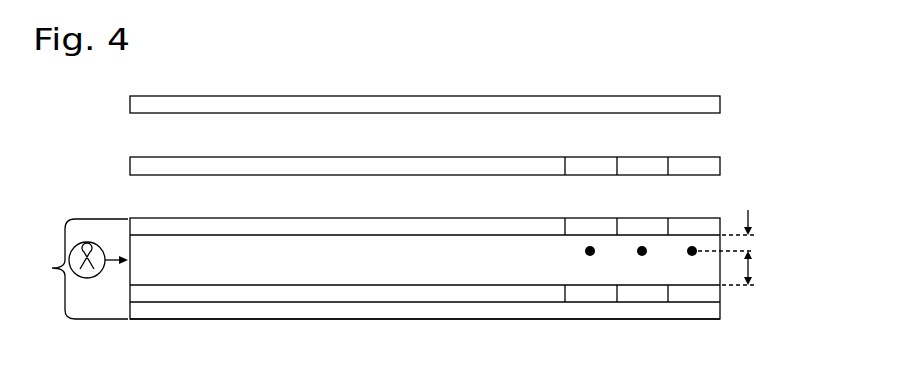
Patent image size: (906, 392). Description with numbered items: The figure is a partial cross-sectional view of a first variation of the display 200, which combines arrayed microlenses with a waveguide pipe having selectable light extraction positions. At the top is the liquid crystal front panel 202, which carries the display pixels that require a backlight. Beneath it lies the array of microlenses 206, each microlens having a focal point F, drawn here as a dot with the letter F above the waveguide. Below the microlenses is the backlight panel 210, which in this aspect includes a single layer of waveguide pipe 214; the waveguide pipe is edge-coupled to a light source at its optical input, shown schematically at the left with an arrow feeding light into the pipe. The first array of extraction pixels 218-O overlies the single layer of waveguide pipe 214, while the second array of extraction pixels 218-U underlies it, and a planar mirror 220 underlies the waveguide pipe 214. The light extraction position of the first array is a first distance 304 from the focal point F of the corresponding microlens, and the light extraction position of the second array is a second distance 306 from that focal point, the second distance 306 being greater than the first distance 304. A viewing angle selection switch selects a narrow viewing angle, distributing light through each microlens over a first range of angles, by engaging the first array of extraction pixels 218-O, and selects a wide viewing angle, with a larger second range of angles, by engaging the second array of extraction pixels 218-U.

The display 200 is at (267, 61).
The liquid crystal front panel 202 is at (407, 96).
The array of microlenses 206 is at (630, 163).
The backlight panel 210 is at (52, 268).
The waveguide pipe 214 is at (553, 271).
The first array of extraction pixels 218-O is at (696, 228).
The second array of extraction pixels 218-U is at (695, 295).
The planar mirror 220 is at (405, 319).
The first distance 304 is at (750, 222).
The second distance 306 is at (750, 268).